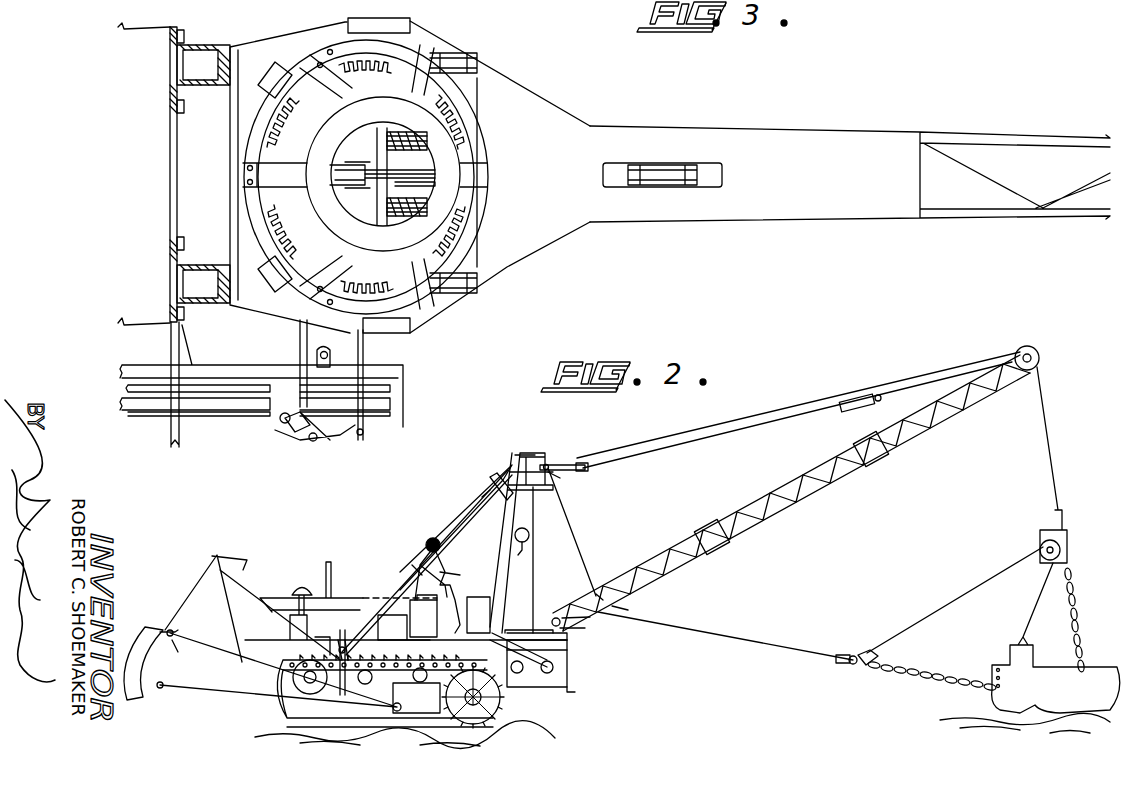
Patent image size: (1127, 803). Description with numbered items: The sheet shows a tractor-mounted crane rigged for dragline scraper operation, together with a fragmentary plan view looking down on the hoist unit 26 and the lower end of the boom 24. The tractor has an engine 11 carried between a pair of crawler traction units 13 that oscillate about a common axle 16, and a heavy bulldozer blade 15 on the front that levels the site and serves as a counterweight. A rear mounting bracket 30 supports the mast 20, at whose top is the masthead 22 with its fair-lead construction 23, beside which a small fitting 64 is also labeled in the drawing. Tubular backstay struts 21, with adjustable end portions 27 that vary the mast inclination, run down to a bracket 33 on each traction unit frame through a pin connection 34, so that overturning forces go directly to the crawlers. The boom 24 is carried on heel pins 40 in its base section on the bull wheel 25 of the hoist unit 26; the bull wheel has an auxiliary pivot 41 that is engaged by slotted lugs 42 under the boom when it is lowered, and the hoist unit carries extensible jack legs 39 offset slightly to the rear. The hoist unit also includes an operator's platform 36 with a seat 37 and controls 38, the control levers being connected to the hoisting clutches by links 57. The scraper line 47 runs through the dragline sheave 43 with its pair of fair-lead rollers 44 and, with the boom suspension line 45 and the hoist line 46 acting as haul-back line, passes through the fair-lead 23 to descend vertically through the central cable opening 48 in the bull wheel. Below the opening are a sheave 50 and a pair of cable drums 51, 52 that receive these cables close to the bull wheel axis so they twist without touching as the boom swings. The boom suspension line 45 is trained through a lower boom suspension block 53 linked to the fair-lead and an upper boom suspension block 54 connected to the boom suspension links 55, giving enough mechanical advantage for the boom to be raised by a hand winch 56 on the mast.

In FIG. 2, the engine 11 is at (278, 597).
In FIG. 2, the crawler traction units 13 is at (275, 717).
In FIG. 2, the bulldozer blade 15 is at (148, 643).
In FIG. 2, the axle 16 is at (500, 708).
In FIG. 2, the mast 20 is at (505, 537).
In FIG. 2, the tubular backstay struts 21 is at (463, 517).
In FIG. 2, the masthead 22 is at (520, 453).
In FIG. 2, the fair-lead construction 23 is at (555, 463).
In FIG. 3, the boom 24 is at (1058, 218).
In FIG. 2, the boom 24 is at (785, 497).
In FIG. 3, the bull wheel 25 is at (410, 262).
In FIG. 2, the bull wheel 25 is at (518, 630).
In FIG. 3, the hoist unit 26 is at (273, 305).
In FIG. 2, the hoist unit 26 is at (553, 665).
In FIG. 2, the end portions 27 is at (492, 490).
In FIG. 3, the rear mounting bracket 30 is at (218, 85).
In FIG. 2, the bracket 33 is at (325, 640).
In FIG. 2, the pin connection 34 is at (342, 640).
In FIG. 3, the operator's platform 36 is at (136, 365).
In FIG. 2, the operator's platform 36 is at (415, 640).
In FIG. 2, the seat 37 is at (400, 600).
In FIG. 2, the controls 38 is at (460, 585).
In FIG. 2, the extensible jack legs 39 is at (575, 692).
In FIG. 3, the heel pins 40 is at (455, 55).
In FIG. 2, the heel pins 40 is at (556, 618).
In FIG. 2, the auxiliary pivot 41 is at (575, 630).
In FIG. 2, the lugs 42 is at (590, 620).
In FIG. 3, the dragline sheave 43 is at (690, 170).
In FIG. 2, the dragline sheave 43 is at (600, 592).
In FIG. 2, the fair-lead rollers 44 is at (625, 610).
In FIG. 2, the boom suspension line 45 is at (732, 428).
In FIG. 3, the hoist line 46 is at (420, 138).
In FIG. 2, the hoist line 46 is at (920, 378).
In FIG. 3, the scraper line 47 is at (420, 208).
In FIG. 2, the scraper line 47 is at (570, 508).
In FIG. 3, the central cable opening 48 is at (343, 202).
In FIG. 3, the sheave 50 is at (333, 180).
In FIG. 3, the cable drum 51 is at (425, 160).
In FIG. 3, the cable drum 52 is at (425, 188).
In FIG. 2, the lower boom suspension block 53 is at (586, 470).
In FIG. 2, the upper boom suspension block 54 is at (848, 410).
In FIG. 2, the boom suspension links 55 is at (908, 392).
In FIG. 2, the hand winch 56 is at (529, 540).
In FIG. 3, the links 57 is at (330, 438).
In FIG. 2, the anchor bracket 64 is at (560, 478).